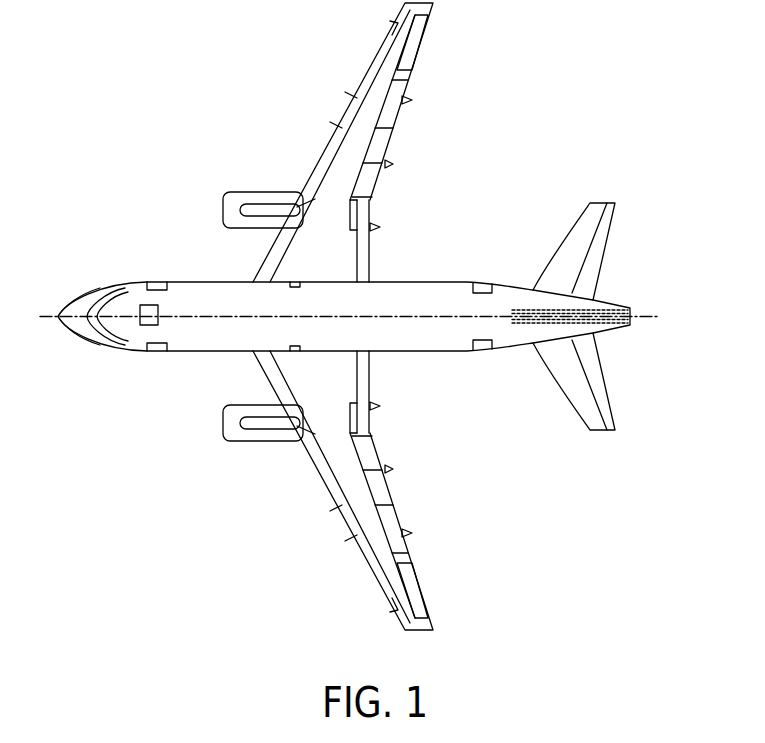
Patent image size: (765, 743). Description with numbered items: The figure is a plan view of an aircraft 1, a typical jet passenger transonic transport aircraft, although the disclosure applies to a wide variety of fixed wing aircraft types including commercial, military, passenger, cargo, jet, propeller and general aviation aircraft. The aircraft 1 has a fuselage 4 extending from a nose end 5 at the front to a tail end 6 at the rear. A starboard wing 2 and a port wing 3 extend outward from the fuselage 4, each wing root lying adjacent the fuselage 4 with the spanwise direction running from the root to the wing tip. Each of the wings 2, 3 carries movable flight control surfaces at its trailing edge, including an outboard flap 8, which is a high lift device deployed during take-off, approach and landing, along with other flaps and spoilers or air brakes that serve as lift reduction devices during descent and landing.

The aircraft 1 is at (477, 130).
The starboard wing 2 is at (378, 442).
The port wing 3 is at (397, 131).
The fuselage 4 is at (217, 293).
The nose end 5 is at (79, 279).
The tail end 6 is at (631, 279).
The outboard flap 8 is at (299, 428).